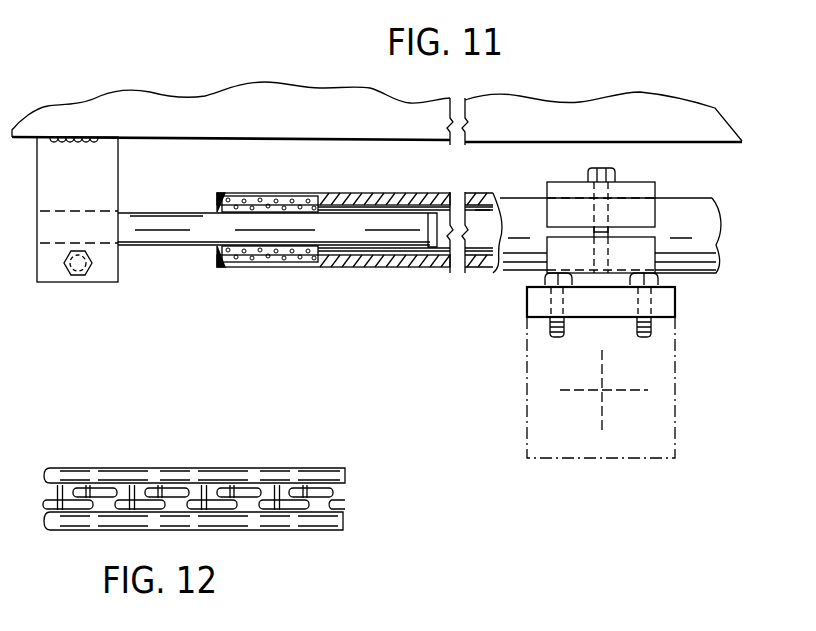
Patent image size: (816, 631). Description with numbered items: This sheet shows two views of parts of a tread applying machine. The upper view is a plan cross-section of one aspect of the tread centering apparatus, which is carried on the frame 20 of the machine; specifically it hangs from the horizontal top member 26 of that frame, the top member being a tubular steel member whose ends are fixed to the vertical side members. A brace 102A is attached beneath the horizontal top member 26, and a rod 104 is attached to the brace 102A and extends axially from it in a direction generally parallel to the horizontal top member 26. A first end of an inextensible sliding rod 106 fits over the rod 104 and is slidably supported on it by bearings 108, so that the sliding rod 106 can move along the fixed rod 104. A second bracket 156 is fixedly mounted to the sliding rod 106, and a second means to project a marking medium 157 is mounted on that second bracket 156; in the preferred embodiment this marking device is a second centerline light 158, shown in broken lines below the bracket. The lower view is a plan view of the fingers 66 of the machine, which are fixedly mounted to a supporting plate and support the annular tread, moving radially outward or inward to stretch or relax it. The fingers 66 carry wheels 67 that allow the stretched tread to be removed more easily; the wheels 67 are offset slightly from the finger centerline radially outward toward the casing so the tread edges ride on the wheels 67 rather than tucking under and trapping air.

In FIG. 11, the frame 20 is at (167, 91).
In FIG. 11, the horizontal top member 26 is at (311, 96).
In FIG. 11, the brace 102A is at (48, 283).
In FIG. 11, the rod 104 is at (167, 240).
In FIG. 11, the inextensible sliding rod 106 is at (356, 268).
In FIG. 11, the bearings 108 is at (281, 205).
In FIG. 11, the second bracket 156 is at (667, 304).
In FIG. 11, the second means to project a marking medium 157 is at (521, 442).
In FIG. 11, the second centerline light 158 is at (598, 460).
In FIG. 12, the fingers 66 is at (285, 470).
In FIG. 12, the wheels 67 is at (333, 497).